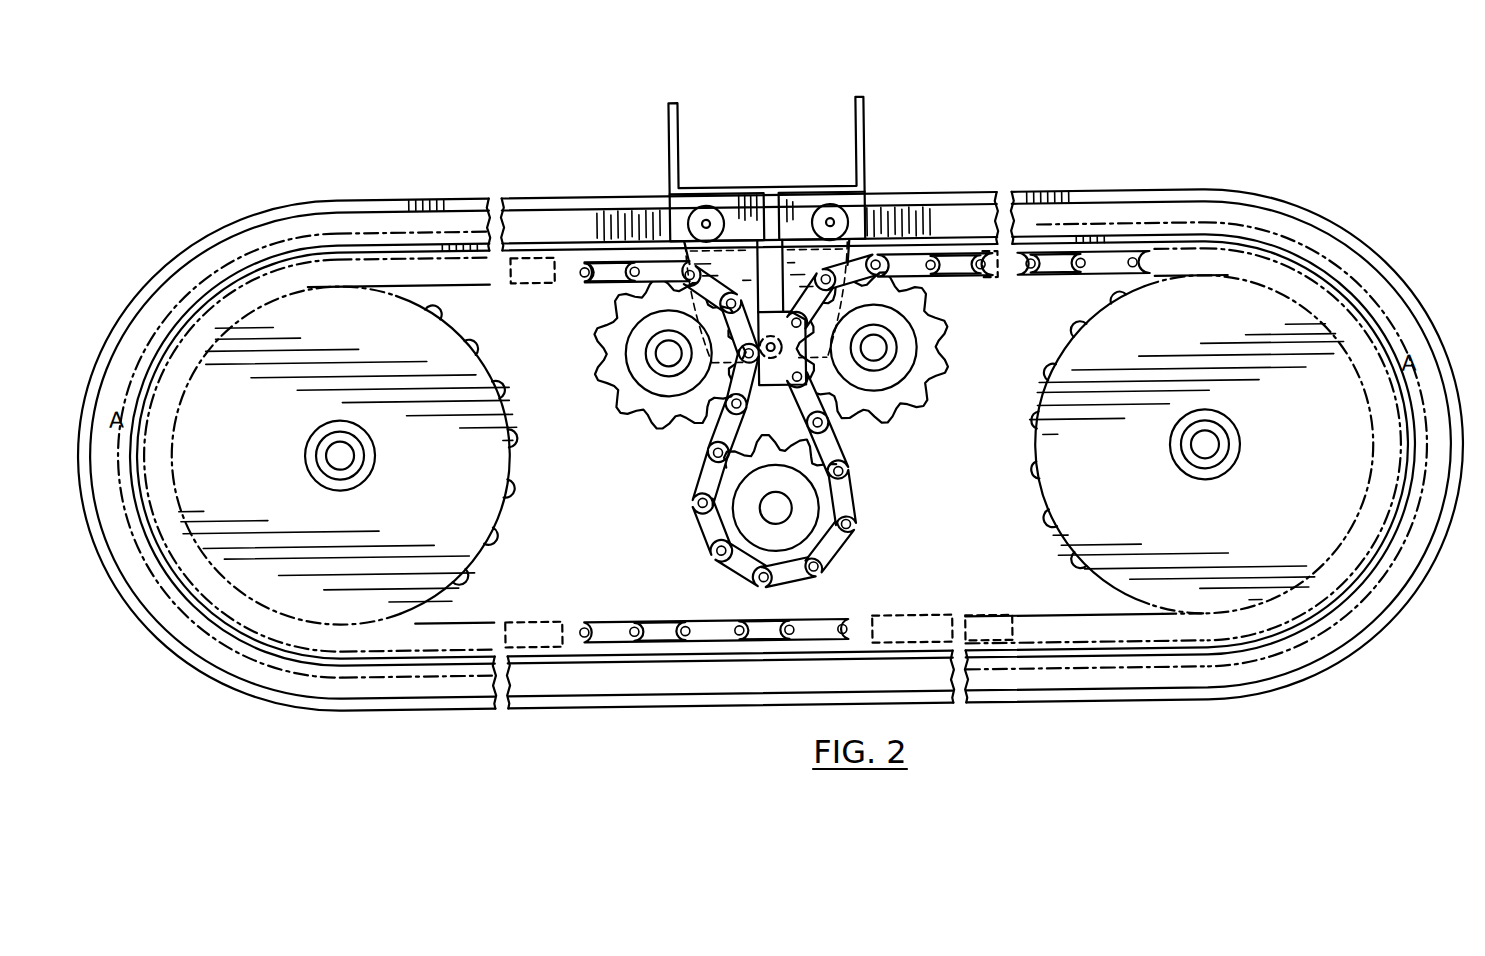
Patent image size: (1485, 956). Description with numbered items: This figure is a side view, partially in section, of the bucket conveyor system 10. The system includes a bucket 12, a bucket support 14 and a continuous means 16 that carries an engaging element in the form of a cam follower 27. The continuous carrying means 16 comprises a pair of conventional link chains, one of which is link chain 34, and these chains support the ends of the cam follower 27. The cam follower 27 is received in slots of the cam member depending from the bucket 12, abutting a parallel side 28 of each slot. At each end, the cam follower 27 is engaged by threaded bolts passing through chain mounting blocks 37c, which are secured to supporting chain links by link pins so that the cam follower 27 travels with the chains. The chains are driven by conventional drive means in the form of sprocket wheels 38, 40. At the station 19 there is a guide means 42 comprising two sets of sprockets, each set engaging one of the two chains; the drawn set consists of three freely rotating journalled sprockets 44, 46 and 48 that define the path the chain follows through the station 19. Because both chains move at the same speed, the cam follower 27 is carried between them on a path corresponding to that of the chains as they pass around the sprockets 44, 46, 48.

The bucket conveyor system 10 is at (1032, 91).
The bucket 12 is at (876, 121).
The bucket support 14 is at (1138, 188).
The continuous means 16 is at (1045, 290).
The station 19 is at (764, 113).
The cam follower 27 is at (839, 388).
The side 28 is at (769, 236).
The link chain 34 is at (579, 285).
The chain mounting block 37c is at (766, 388).
The sprocket wheel 38 is at (1045, 505).
The sprocket wheel 40 is at (490, 517).
The guide means 42 is at (626, 440).
The sprocket 44 is at (932, 402).
The sprocket 46 is at (820, 489).
The sprocket 48 is at (618, 411).